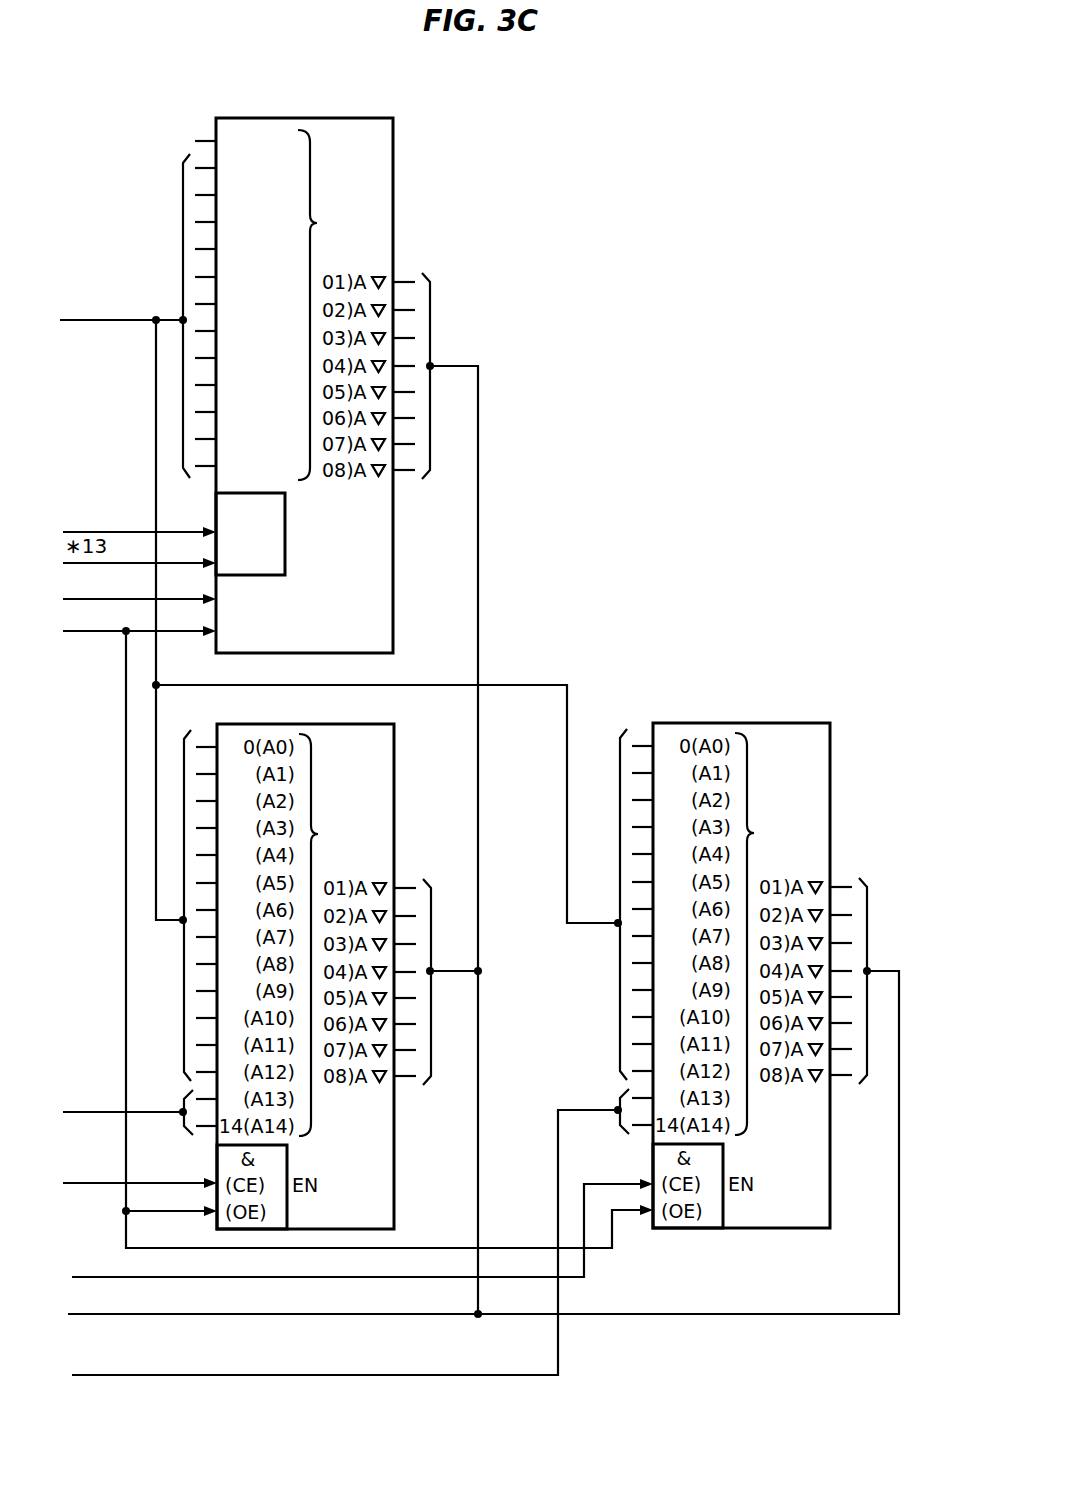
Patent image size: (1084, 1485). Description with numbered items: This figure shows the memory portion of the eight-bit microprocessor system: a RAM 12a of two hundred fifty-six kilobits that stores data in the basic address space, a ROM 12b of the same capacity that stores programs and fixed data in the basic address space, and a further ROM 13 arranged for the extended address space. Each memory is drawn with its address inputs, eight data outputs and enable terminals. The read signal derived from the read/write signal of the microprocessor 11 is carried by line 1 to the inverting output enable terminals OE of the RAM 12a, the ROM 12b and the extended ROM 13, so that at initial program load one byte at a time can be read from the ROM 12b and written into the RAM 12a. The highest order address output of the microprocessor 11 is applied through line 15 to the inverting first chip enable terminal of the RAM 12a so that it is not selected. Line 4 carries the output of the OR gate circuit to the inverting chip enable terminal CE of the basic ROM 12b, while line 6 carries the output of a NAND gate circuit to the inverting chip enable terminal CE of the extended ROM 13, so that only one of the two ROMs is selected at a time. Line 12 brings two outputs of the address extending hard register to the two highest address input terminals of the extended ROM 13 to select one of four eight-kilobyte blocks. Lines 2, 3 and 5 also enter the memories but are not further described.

The RAM 12a is at (393, 178).
The ROM 12b is at (394, 782).
The ROM 13 is at (830, 778).
The line 1 is at (358, 924).
The signal line *2 (WE) 2 is at (139, 586).
The address bus * 3 is at (341, 609).
The OR gate circuit output line 4 is at (140, 1172).
The signal line * 5 is at (125, 1100).
The NAND gate circuit output line 6 is at (362, 1228).
The eight-bit microprocessor 11 is at (483, 840).
The line 12 is at (345, 1240).
The line 15 is at (139, 520).